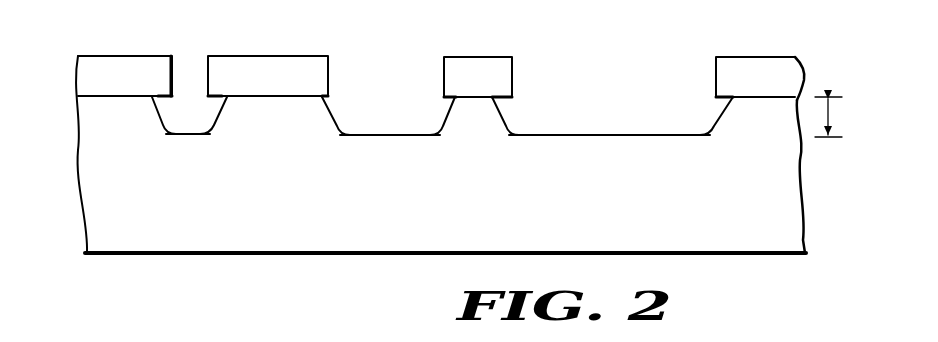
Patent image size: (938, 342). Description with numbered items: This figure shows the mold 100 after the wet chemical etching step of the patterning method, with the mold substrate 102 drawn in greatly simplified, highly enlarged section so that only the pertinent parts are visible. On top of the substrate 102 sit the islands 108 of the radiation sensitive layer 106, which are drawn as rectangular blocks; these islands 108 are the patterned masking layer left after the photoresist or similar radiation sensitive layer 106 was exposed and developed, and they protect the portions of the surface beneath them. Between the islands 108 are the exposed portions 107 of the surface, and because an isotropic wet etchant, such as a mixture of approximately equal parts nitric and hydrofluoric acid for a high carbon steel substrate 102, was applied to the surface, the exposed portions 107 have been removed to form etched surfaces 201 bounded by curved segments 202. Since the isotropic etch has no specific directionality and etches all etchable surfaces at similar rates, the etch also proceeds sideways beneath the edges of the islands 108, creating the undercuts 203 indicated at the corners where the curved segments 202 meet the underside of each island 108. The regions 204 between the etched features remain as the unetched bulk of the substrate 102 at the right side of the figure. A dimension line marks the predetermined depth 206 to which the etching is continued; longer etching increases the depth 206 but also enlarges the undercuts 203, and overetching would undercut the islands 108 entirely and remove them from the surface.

The mold 100 is at (724, 282).
The mold substrate 102 is at (798, 211).
The radiation sensitive layer 106 is at (842, 62).
The exposed portions 107 is at (322, 35).
The islands 108 is at (84, 73).
The surfaces 201 is at (190, 136).
The curved segments 202 is at (158, 113).
The undercuts 203 is at (210, 107).
The substrate region between trenches 204 is at (320, 190).
The predetermined depth 206 is at (834, 116).